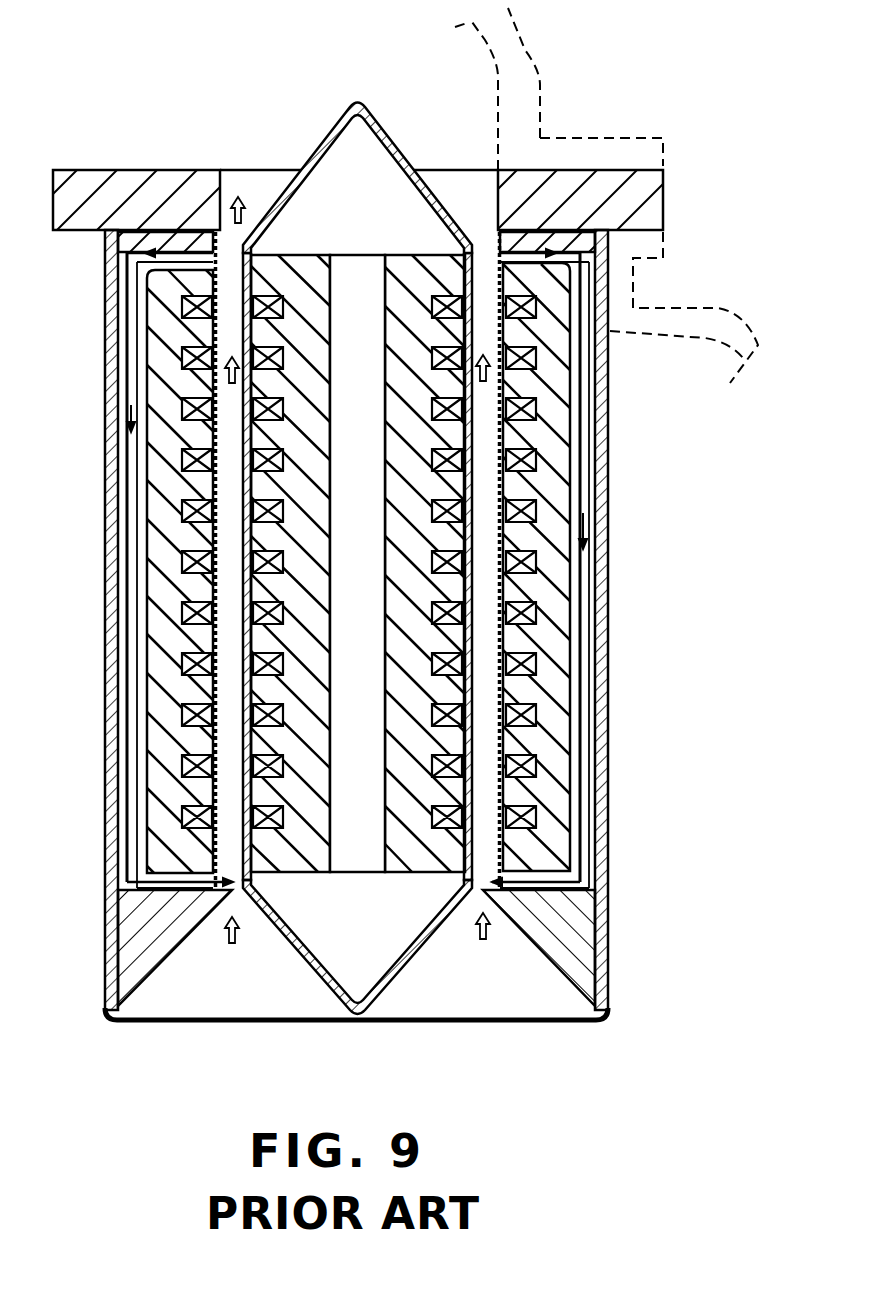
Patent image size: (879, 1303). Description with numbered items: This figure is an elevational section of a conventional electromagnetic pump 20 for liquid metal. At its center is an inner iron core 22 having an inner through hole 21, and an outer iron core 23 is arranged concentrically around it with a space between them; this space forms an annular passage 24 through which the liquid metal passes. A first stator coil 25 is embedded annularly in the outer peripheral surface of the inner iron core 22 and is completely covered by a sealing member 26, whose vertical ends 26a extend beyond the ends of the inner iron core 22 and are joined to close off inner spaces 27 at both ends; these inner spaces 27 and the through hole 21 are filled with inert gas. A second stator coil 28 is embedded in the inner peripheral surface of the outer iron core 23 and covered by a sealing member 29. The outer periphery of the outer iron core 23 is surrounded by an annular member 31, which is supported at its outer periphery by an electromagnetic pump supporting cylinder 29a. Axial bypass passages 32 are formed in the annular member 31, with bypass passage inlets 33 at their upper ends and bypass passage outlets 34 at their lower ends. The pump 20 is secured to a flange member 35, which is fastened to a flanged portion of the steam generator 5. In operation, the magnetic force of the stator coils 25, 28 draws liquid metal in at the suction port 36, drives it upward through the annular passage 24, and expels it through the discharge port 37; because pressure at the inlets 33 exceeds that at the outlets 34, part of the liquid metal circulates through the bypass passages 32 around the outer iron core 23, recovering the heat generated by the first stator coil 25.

The steam generator 5 is at (535, 70).
The electromagnetic pump 20 is at (376, 104).
The inner through hole 21 is at (355, 487).
The inner iron core 22 is at (258, 535).
The outer iron core 23 is at (153, 465).
The annular passage 24 is at (227, 633).
The first stator coil 25 is at (290, 280).
The sealing member 26 is at (237, 586).
The vertical ends of the sealing member 26a is at (338, 130).
The inner spaces 27 is at (382, 167).
The second stator coil 28 is at (178, 310).
The sealing member 29 is at (563, 693).
The electromagnetic pump supporting cylinder 29a is at (605, 522).
The annular member 31 is at (600, 380).
The bypass passages 32 is at (122, 793).
The bypass passage inlets 33 is at (490, 250).
The bypass passage outlets 34 is at (492, 883).
The flange member 35 is at (100, 180).
The suction port 36 is at (543, 988).
The discharge port 37 is at (275, 185).